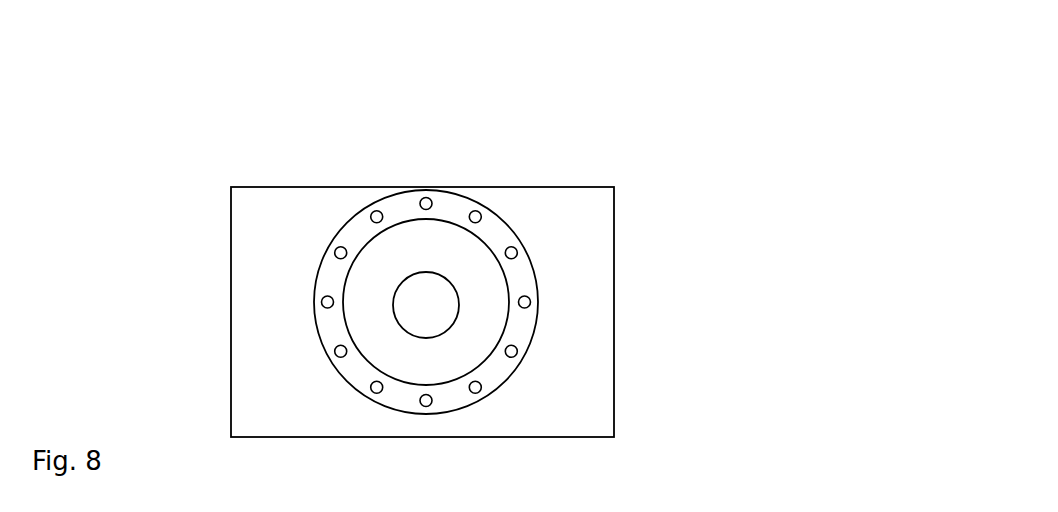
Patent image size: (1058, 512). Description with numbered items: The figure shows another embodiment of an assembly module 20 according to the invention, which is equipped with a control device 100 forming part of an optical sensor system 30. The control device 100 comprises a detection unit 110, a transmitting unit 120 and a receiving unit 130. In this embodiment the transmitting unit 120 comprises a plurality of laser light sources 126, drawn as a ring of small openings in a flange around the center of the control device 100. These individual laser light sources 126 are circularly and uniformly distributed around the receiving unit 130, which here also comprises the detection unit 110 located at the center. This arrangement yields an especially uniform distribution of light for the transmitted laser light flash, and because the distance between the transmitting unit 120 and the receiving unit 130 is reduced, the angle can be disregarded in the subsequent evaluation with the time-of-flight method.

The optical sensor system 30 is at (593, 90).
The control device 100 is at (262, 187).
The assembly module 20 is at (288, 172).
The detection unit 110 is at (428, 280).
The receiving unit 130 is at (443, 288).
The transmitting unit 120 is at (531, 282).
The laser light sources 126 is at (476, 393).